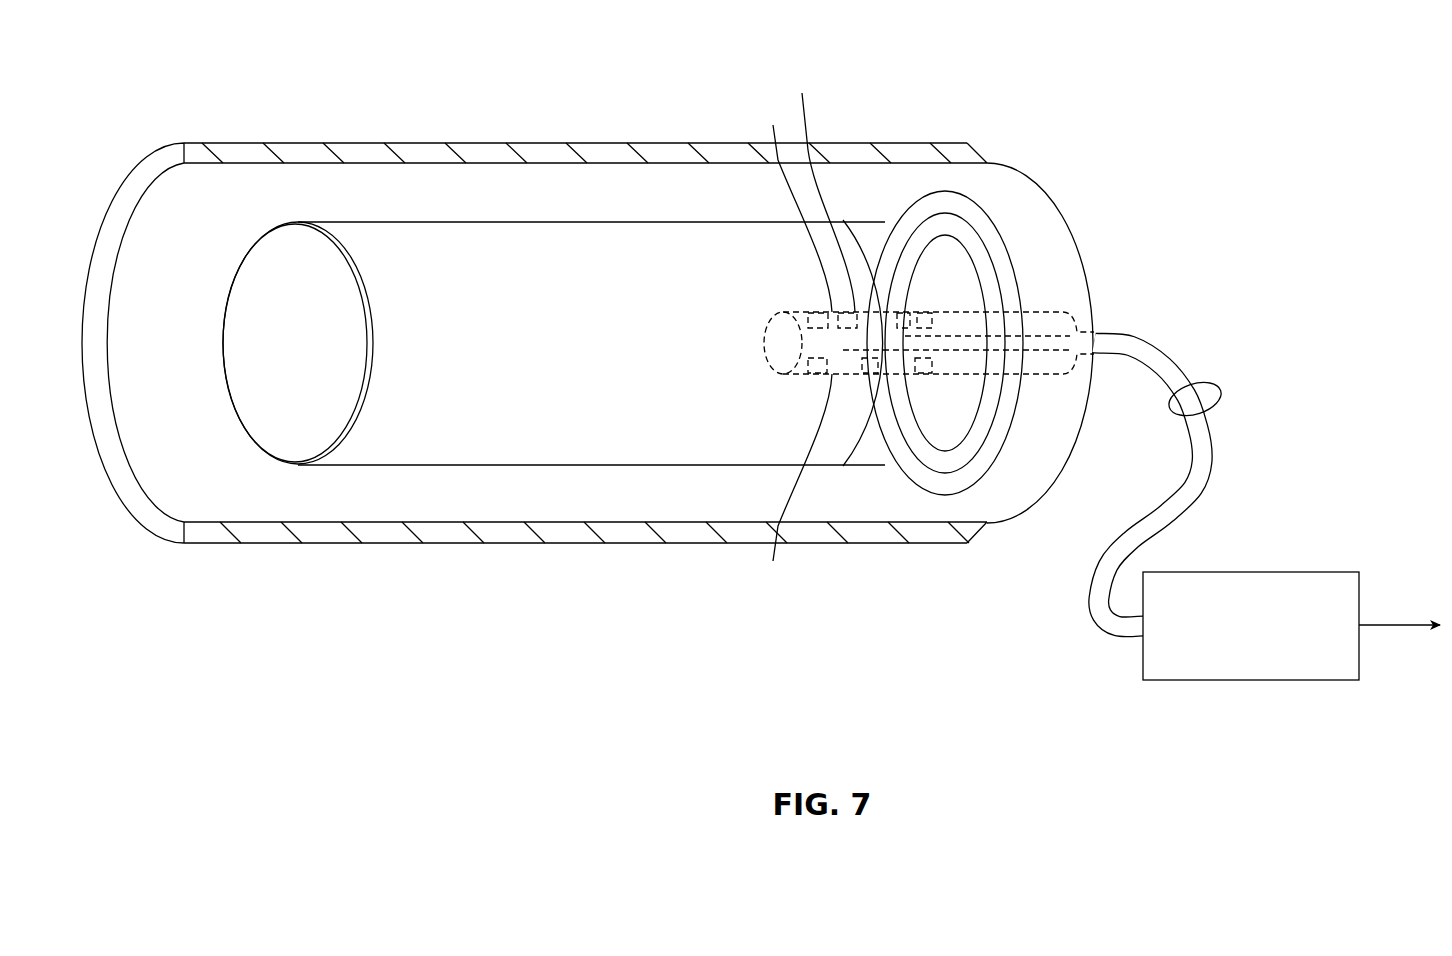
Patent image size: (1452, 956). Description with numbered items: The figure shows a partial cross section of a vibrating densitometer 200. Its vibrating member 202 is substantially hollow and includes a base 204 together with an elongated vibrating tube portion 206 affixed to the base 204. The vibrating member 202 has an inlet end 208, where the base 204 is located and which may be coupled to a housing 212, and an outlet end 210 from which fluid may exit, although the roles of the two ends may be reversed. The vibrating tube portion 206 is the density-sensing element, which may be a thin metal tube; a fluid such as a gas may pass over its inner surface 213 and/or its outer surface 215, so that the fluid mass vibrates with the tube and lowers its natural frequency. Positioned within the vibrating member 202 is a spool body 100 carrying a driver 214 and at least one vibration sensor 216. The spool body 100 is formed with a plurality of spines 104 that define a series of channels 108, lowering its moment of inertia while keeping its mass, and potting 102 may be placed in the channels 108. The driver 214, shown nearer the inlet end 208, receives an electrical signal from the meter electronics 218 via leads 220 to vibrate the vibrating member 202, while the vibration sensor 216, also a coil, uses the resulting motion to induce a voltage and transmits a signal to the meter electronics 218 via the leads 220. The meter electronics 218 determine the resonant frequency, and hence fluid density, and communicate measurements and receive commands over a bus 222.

The spool body 100 is at (836, 378).
The potting 102 is at (820, 311).
The spines 104 is at (830, 310).
The channels 108 is at (827, 311).
The vibrating densitometer 200 is at (1091, 97).
The vibrating member 202 is at (1095, 291).
The base 204 is at (1060, 220).
The vibrating tube portion 206 is at (442, 222).
The inlet end 208 is at (1087, 249).
The outlet end 210 is at (295, 203).
The housing 212 is at (423, 142).
The inner surface 213 is at (274, 412).
The driver 214 is at (818, 188).
The outer surface 215 is at (565, 356).
The vibration sensor 216 is at (792, 203).
The meter electronics 218 is at (1251, 681).
The leads 220 is at (1222, 385).
The bus 222 is at (1407, 623).